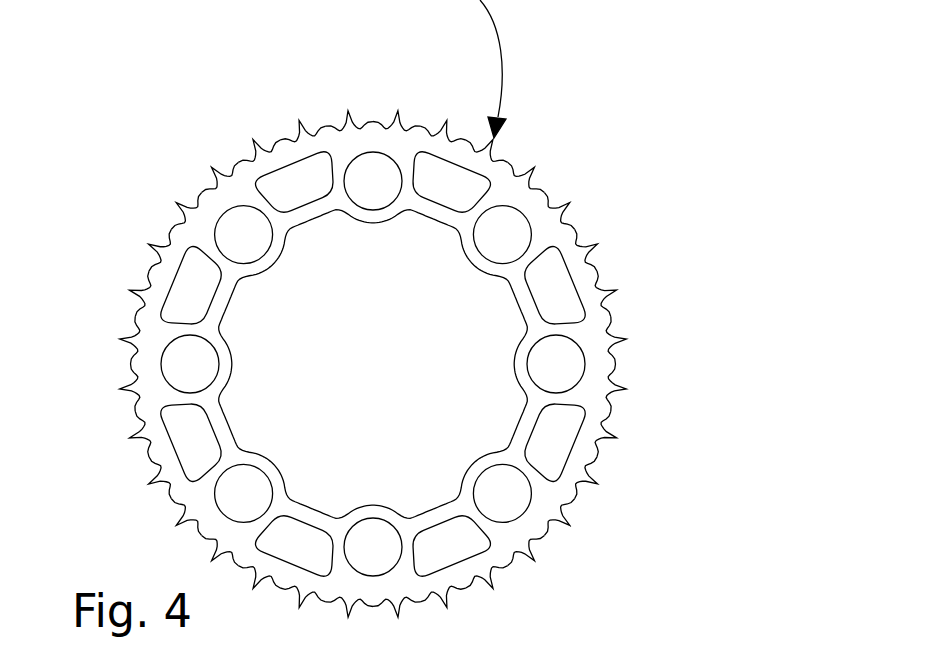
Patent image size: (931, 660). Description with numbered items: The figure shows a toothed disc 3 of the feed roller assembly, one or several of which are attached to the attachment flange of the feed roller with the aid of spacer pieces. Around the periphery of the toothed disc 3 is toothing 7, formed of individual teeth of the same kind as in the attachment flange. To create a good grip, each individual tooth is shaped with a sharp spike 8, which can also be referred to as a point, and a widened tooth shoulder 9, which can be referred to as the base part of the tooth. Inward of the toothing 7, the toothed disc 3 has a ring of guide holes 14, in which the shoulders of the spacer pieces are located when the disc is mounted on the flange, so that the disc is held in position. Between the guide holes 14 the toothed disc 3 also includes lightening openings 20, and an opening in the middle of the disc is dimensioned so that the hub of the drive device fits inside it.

The toothed disc 3 is at (556, 85).
The toothing 7 is at (450, 92).
The sharp spike 8 is at (348, 112).
The widened tooth shoulder 9 is at (142, 287).
The guide holes 14 is at (550, 342).
The lightening openings 20 is at (163, 413).